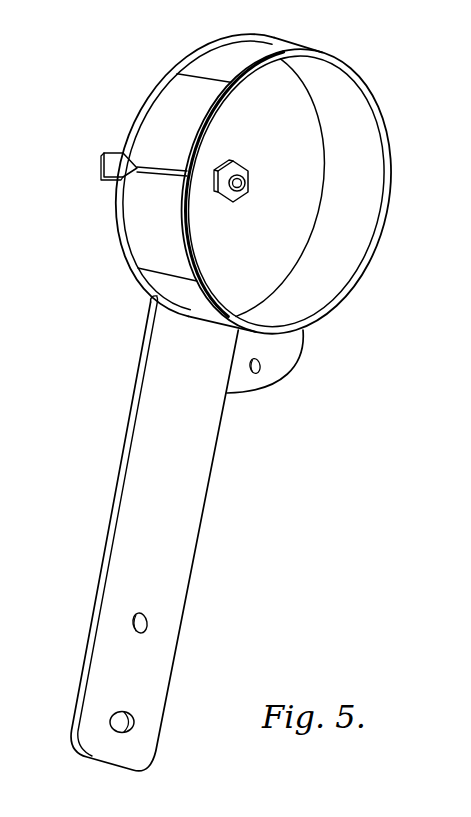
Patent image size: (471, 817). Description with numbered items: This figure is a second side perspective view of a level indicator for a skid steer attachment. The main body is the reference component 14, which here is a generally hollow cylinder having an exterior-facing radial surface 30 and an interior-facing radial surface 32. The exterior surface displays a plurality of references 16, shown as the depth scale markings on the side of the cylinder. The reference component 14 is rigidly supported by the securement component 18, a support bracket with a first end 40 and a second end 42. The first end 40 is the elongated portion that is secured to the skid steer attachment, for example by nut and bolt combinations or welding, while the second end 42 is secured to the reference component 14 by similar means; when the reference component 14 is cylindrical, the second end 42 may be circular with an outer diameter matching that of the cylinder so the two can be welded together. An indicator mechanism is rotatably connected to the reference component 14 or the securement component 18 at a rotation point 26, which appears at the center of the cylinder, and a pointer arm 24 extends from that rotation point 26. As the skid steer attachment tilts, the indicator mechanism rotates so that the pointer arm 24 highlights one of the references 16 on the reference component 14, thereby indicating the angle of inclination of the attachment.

The reference component 14 is at (295, 307).
The references 16 is at (113, 61).
The securement component 18 is at (192, 473).
The pointer arm 24 is at (113, 156).
The rotation point 26 is at (247, 178).
The exterior-facing radial surface 30 is at (277, 48).
The interior-facing radial surface 32 is at (360, 230).
The first end 40 is at (117, 667).
The second end 42 is at (183, 56).